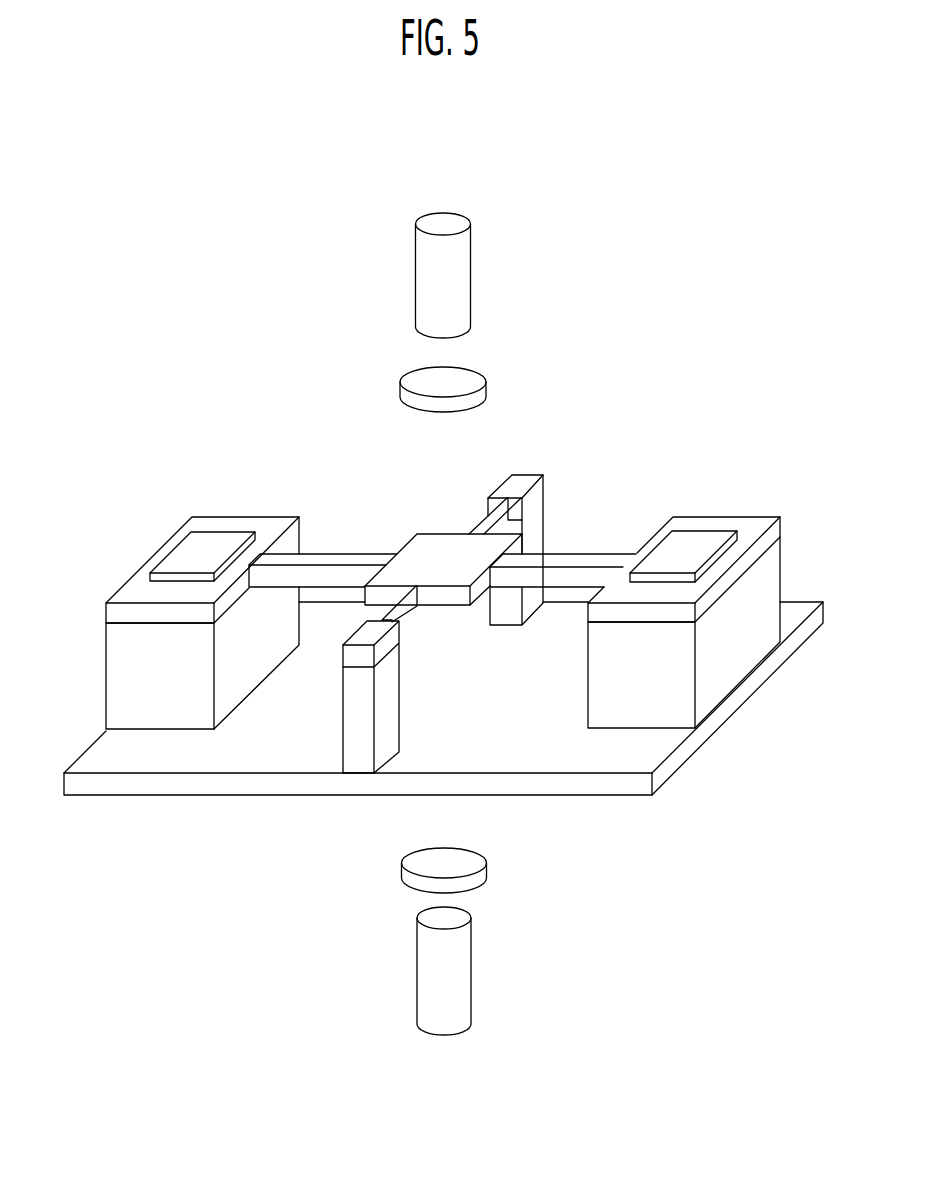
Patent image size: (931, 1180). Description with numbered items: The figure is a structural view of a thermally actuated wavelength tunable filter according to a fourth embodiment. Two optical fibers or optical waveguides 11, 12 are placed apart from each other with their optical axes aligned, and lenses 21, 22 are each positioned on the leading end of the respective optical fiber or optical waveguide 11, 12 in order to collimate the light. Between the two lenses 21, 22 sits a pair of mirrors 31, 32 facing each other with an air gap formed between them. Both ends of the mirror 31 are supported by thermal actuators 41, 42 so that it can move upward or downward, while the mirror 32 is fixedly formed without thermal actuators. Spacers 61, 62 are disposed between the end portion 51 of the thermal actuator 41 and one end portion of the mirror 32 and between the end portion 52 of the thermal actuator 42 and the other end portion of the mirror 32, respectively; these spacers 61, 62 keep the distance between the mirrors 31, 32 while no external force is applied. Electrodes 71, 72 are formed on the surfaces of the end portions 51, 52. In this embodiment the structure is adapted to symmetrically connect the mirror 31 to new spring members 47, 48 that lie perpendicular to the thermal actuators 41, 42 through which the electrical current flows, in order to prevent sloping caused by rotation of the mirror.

The optical fiber or optical waveguide 11 is at (462, 289).
The optical fiber or optical waveguide 12 is at (463, 965).
The lens 21 is at (470, 377).
The lens 22 is at (486, 872).
The mirror 31 is at (440, 540).
The mirror 32 is at (203, 787).
The thermal actuator 41 is at (347, 558).
The thermal actuator 42 is at (567, 560).
The spring member 47 is at (495, 503).
The spring member 48 is at (405, 613).
The end portion of the thermal actuator 51 is at (207, 525).
The end portion of the thermal actuator 52 is at (753, 528).
The spacer 61 is at (113, 660).
The spacer 62 is at (767, 568).
The electrode 71 is at (177, 562).
The electrode 72 is at (705, 547).